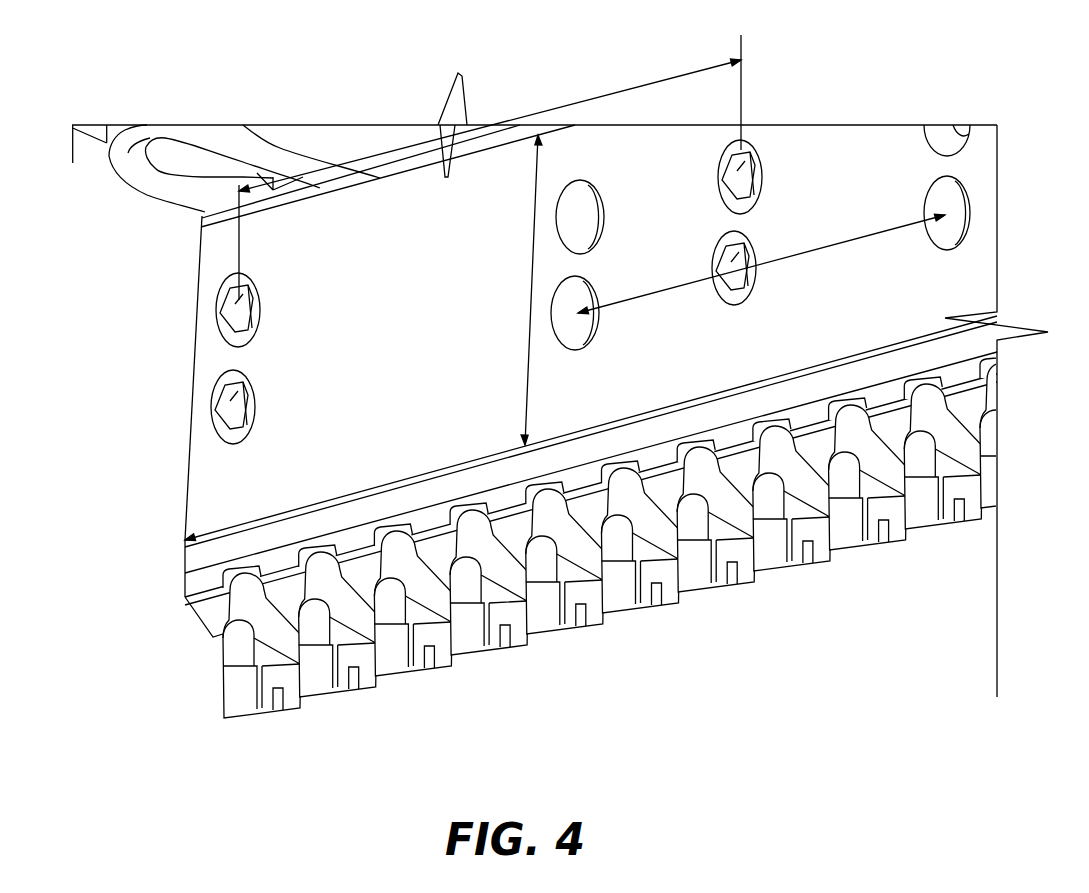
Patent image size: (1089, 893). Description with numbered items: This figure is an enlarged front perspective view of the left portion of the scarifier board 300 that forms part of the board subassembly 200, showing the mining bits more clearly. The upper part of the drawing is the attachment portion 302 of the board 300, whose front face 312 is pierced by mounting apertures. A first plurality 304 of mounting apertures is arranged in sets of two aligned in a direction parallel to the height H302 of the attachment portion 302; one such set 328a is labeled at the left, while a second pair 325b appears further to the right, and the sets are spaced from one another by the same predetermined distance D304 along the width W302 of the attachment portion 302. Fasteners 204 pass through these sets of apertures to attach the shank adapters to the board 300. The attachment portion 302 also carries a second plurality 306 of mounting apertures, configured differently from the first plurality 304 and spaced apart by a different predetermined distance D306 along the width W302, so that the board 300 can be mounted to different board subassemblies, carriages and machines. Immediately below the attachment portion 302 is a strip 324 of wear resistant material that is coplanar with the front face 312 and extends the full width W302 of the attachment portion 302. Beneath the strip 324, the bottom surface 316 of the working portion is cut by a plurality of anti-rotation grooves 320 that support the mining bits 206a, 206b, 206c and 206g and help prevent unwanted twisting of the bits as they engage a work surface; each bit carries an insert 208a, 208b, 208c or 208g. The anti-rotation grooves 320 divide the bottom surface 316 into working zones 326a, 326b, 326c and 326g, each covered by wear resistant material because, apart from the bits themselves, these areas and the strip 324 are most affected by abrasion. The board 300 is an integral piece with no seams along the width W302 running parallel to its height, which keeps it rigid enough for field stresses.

The board subassembly 200 is at (549, 410).
The board 300 is at (180, 473).
The attachment portion 302 is at (354, 403).
The front face 312 is at (685, 341).
The first plurality of mounting apertures 304 is at (544, 292).
The fasteners 204 is at (544, 292).
The set of two mounting apertures 328a is at (233, 400).
The second fastener pair 325b is at (745, 252).
The second plurality of mounting apertures 306 is at (580, 280).
The strip 324 is at (320, 530).
The anti-rotation grooves 320 is at (184, 555).
The bottom surface 316 is at (195, 626).
The mining bit 206a is at (264, 675).
The mining bit 206b is at (360, 660).
The mining bit 206c is at (444, 653).
The mining bit 206g is at (715, 560).
The insert 208a is at (264, 675).
The insert 208b is at (360, 660).
The insert 208c is at (444, 653).
The insert 208g is at (715, 560).
The working zone 326a is at (283, 707).
The working zone 326b is at (360, 687).
The working zone 326c is at (450, 655).
The working zone 326g is at (733, 543).
The predetermined distance D304 is at (633, 89).
The height H302 is at (540, 170).
The predetermined distance D306 is at (847, 247).
The width W302 is at (917, 320).